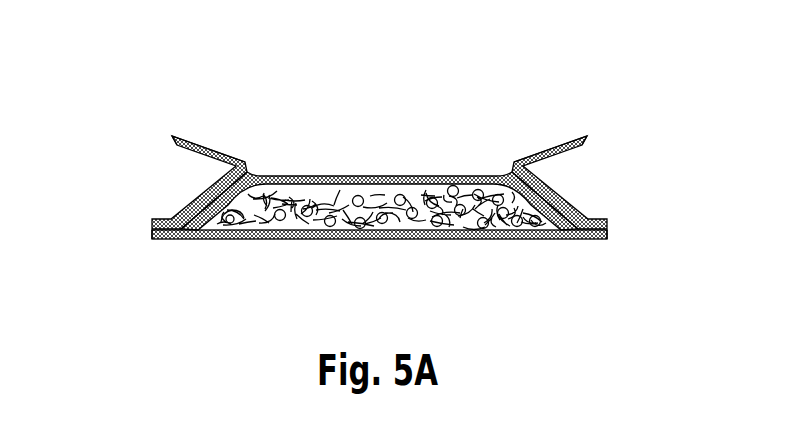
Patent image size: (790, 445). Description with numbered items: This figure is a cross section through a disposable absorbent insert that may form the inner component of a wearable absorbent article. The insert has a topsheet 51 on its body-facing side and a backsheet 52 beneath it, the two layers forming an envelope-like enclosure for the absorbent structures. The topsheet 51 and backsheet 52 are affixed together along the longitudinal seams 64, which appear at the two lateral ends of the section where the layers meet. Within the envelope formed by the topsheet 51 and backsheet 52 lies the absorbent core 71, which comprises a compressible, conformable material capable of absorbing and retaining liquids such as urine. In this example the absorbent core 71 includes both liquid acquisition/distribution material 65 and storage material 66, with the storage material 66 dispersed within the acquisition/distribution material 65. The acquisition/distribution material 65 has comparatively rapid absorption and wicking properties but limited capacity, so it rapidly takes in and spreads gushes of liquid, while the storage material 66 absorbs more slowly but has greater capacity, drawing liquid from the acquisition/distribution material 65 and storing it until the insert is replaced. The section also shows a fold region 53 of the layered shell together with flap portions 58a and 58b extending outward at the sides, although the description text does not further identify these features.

The topsheet 51 is at (292, 176).
The backsheet 52 is at (400, 240).
The shell side wall fold 53 is at (237, 153).
The flap upper layer 58a is at (195, 143).
The flap end 58b is at (172, 136).
The longitudinal seams 64 is at (161, 240).
The liquid acquisition/distribution material 65 is at (470, 193).
The storage material 66 is at (398, 196).
The absorbent core 71 is at (229, 224).